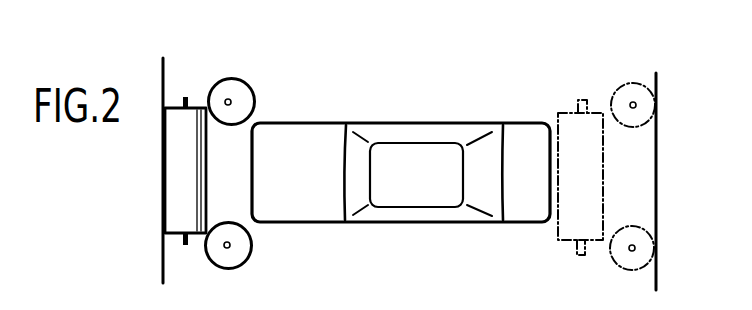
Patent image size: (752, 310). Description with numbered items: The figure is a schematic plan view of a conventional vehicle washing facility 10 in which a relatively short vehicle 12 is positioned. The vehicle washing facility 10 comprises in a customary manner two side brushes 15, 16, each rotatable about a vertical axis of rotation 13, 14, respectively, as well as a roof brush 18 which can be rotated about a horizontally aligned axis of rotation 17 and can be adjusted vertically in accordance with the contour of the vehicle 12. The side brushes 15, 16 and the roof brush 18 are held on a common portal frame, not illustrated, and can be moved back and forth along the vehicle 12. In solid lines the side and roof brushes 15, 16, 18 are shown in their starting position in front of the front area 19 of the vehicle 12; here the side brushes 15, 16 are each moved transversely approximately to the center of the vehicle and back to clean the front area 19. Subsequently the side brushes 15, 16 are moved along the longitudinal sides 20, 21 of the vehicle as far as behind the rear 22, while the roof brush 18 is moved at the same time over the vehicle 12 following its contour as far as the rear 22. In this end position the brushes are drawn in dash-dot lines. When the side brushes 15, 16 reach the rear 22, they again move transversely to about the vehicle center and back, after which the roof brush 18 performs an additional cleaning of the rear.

The vehicle washing facility 10 is at (206, 57).
The vehicle 12 is at (410, 110).
The axis of rotation 13 is at (231, 101).
The axis of rotation 14 is at (230, 245).
The side brush 15 is at (254, 98).
The side brush 16 is at (239, 263).
The axis of rotation 17 is at (181, 244).
The roof brush 18 is at (177, 178).
The front area 19 is at (251, 156).
The longitudinal side 20 is at (462, 123).
The longitudinal side 21 is at (433, 223).
The rear 22 is at (562, 132).